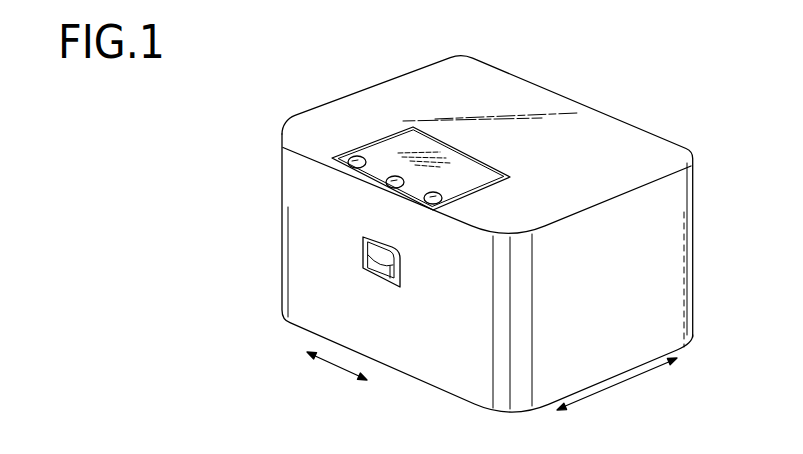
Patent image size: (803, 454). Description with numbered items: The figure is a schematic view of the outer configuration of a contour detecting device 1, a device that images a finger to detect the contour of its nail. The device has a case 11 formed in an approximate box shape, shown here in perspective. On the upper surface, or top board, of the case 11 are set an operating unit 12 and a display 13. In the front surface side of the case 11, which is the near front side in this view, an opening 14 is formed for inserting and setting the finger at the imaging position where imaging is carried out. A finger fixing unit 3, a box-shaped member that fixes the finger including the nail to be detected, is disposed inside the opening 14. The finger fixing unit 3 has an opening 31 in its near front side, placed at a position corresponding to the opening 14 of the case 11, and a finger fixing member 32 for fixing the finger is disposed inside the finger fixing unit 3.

The contour detecting device 1 is at (522, 52).
The case 11 is at (663, 133).
The operating unit 12 is at (424, 198).
The display 13 is at (407, 140).
The opening 14 is at (366, 244).
The finger fixing unit 3 is at (356, 261).
The opening 31 is at (390, 269).
The finger fixing member 32 is at (380, 261).